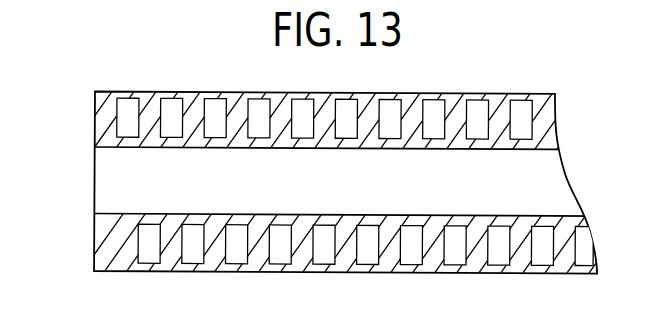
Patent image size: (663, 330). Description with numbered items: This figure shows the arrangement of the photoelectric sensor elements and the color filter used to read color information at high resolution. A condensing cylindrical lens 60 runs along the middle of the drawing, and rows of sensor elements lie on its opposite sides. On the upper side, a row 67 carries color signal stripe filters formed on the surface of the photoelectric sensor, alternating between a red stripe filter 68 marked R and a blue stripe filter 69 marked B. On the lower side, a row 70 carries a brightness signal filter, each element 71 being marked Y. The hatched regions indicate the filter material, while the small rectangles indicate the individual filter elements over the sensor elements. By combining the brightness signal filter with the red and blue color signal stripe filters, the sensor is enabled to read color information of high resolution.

The condensing cylindrical lens 60 is at (102, 176).
The first color filter layer 67 is at (315, 93).
The red filter element 68 is at (128, 117).
The blue filter element 69 is at (171, 117).
The second color filter layer 70 is at (331, 267).
The yellow filter element 71 is at (149, 243).